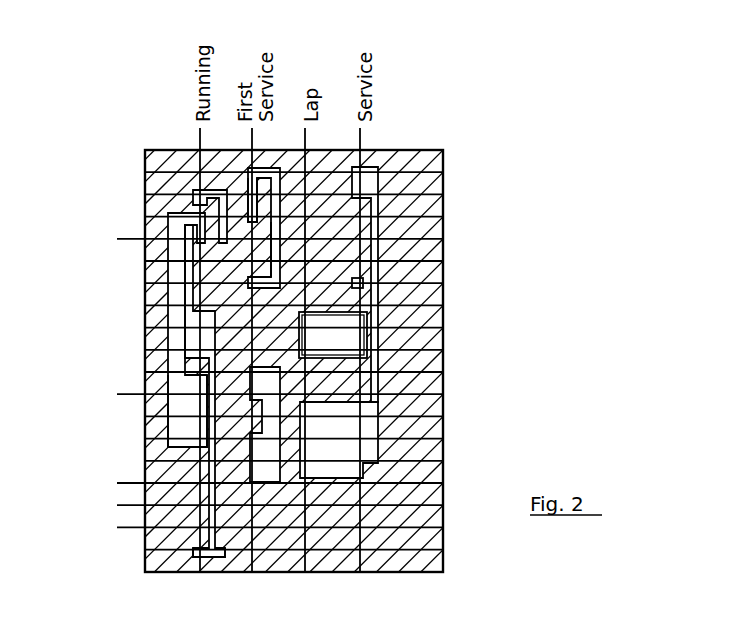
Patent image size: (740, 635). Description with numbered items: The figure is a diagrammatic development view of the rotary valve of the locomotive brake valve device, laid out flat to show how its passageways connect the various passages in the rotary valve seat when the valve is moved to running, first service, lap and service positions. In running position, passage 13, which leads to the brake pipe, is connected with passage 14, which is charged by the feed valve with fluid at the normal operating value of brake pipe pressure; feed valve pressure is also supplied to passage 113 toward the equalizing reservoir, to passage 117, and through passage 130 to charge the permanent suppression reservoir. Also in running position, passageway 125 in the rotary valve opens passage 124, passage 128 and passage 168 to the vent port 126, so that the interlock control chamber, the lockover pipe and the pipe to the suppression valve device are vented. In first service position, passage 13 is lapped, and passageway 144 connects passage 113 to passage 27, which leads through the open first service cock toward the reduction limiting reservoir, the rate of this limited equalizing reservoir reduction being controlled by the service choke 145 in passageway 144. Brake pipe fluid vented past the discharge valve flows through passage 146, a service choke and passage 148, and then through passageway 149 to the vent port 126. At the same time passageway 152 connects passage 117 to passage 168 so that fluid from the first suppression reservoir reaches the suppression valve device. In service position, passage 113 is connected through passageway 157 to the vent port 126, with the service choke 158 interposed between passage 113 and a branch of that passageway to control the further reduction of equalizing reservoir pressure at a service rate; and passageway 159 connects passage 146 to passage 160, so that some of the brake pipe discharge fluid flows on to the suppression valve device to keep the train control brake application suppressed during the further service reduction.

The passage 27 is at (145, 172).
The passage 117 is at (145, 194).
The passage 168 is at (145, 217).
The passage 13 is at (145, 261).
The passage 113 is at (145, 283).
The passage 130 is at (145, 305).
The passage 160 is at (145, 328).
The passage 146 is at (145, 350).
The passage 128 is at (145, 372).
The passage 124 is at (145, 416).
The vent port 126 is at (145, 439).
The passage 148 is at (145, 461).
The passage 14 is at (145, 550).
The passageway 125 is at (182, 432).
The passageway 152 is at (250, 203).
The passageway 144 is at (272, 182).
The service choke 145 is at (272, 228).
The passageway 149 is at (274, 471).
The passageway 157 is at (377, 231).
The service choke 158 is at (428, 273).
The passageway 159 is at (343, 325).